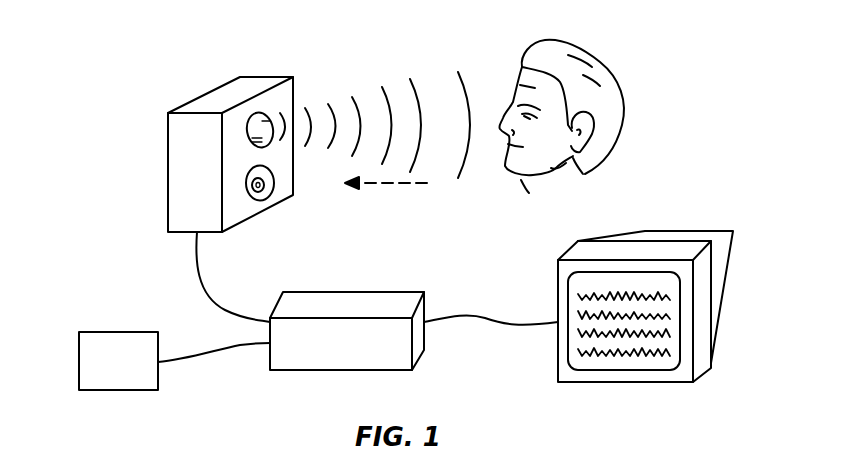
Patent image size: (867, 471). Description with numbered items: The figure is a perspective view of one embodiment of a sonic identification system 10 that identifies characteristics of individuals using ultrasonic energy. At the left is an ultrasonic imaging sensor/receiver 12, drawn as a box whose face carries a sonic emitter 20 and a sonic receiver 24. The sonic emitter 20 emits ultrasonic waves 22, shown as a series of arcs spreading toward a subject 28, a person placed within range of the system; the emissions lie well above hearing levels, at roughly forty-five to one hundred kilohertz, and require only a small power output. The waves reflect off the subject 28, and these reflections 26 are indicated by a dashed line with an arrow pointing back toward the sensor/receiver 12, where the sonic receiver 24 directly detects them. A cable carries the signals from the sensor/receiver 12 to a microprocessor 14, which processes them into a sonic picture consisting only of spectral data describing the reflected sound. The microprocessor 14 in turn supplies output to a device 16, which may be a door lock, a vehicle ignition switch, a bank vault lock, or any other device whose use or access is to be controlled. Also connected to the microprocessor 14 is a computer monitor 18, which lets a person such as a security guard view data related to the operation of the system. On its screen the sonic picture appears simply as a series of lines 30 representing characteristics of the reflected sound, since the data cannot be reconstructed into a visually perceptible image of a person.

The sonic identification system 10 is at (160, 35).
The ultrasonic imaging sensor/receiver 12 is at (223, 101).
The microprocessor 14 is at (368, 303).
The device 16 is at (115, 343).
The computer monitor 18 is at (658, 248).
The sonic emitter 20 is at (248, 133).
The ultrasonic waves 22 is at (360, 115).
The sonic receiver 24 is at (248, 186).
The reflections 26 is at (380, 185).
The subject 28 is at (600, 62).
The lines 30 is at (672, 311).